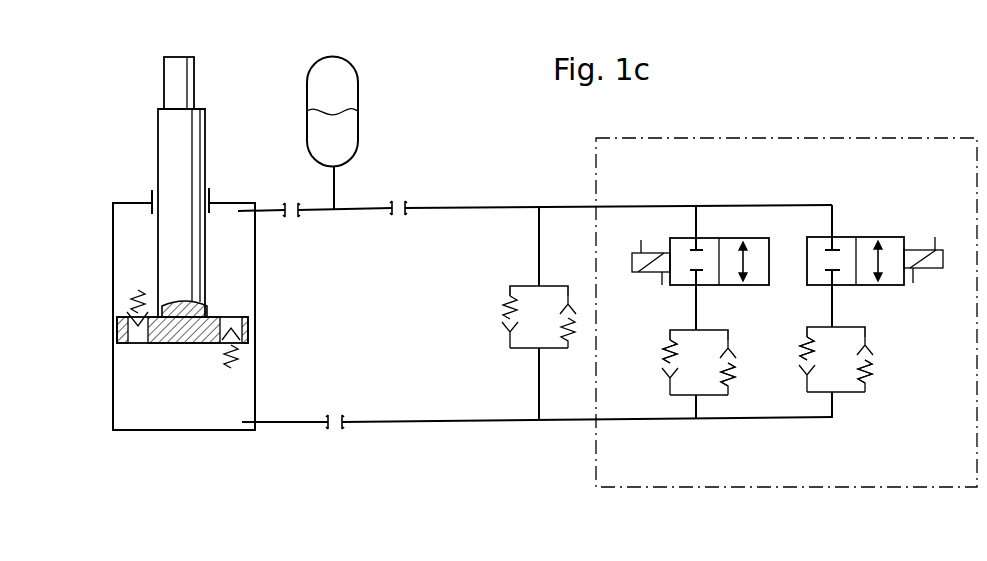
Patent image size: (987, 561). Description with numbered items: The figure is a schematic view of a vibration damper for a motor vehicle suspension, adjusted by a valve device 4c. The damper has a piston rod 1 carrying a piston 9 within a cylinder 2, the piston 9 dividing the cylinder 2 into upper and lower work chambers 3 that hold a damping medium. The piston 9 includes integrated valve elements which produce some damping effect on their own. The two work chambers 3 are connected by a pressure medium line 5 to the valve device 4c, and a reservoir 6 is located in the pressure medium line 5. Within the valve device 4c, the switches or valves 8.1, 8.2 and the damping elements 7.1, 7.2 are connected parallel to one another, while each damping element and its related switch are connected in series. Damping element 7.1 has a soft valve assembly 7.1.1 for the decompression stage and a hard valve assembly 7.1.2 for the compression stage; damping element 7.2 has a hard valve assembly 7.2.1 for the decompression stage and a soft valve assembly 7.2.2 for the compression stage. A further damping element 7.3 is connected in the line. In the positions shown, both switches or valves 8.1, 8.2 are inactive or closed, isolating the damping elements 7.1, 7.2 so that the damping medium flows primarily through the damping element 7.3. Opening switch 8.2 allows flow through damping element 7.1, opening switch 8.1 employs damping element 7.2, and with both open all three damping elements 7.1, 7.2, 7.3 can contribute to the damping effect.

The piston rod 1 is at (192, 148).
The cylinder 2 is at (256, 245).
The work chambers 3 is at (247, 275).
The valve device 4c is at (590, 155).
The pressure medium line 5 is at (411, 208).
The reservoir 6 is at (316, 92).
The damping element 7.1 is at (697, 345).
The soft valve assembly 7.1.1 is at (730, 378).
The hard valve assembly 7.1.2 is at (670, 347).
The damping element 7.2 is at (833, 343).
The hard valve assembly 7.2.1 is at (872, 372).
The soft valve assembly 7.2.2 is at (808, 352).
The damping element 7.3 is at (530, 300).
The switch or valve 8.1 is at (850, 237).
The switch or valve 8.2 is at (735, 238).
The piston 9 is at (211, 318).